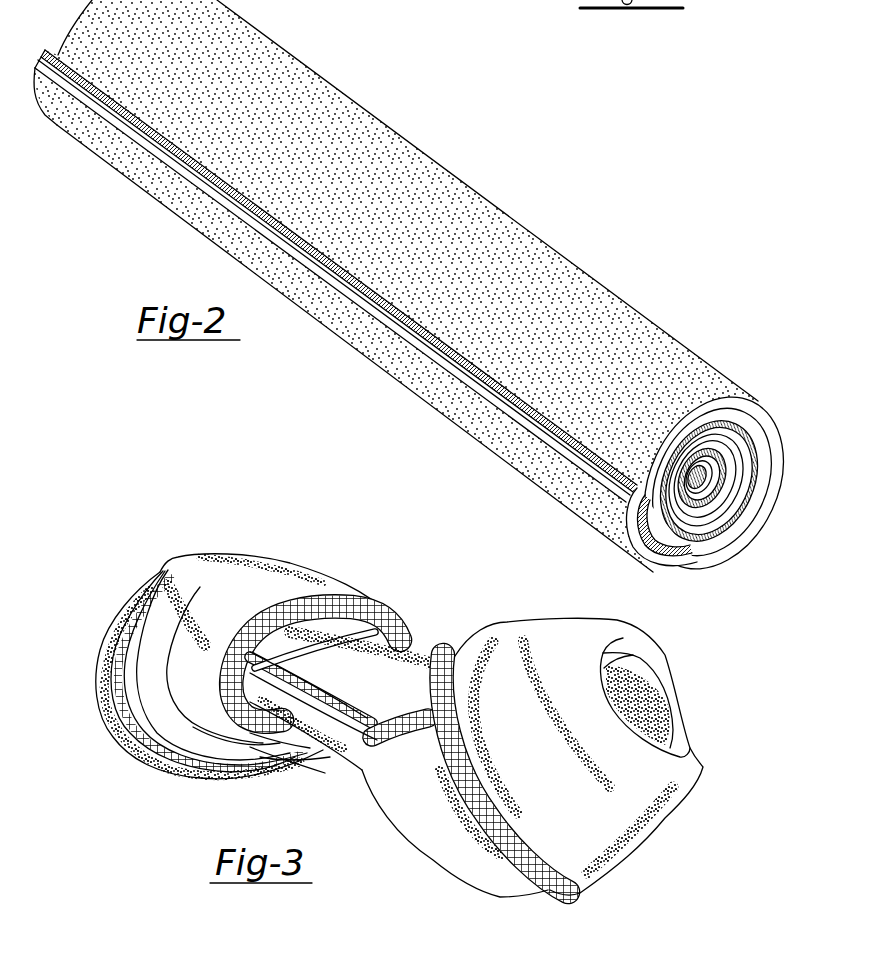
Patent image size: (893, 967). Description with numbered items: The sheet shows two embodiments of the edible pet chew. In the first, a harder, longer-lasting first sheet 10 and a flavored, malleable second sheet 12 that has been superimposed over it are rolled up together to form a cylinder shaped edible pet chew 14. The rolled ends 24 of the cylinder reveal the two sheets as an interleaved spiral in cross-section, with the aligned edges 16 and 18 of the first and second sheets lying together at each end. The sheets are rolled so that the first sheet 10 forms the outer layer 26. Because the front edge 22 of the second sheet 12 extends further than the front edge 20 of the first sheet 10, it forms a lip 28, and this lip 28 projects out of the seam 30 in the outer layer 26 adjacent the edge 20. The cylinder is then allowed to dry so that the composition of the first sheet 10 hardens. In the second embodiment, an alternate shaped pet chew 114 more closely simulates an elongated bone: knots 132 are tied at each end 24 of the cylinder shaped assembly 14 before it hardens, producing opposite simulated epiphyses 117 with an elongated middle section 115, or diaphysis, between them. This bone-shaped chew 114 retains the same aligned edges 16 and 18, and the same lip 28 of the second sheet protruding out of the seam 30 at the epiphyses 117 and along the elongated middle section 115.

In FIG. 2, the first sheet 10 is at (503, 442).
In FIG. 3, the first sheet 10 is at (627, 850).
In FIG. 2, the second sheet 12 is at (742, 480).
In FIG. 3, the second sheet 12 is at (525, 873).
In FIG. 2, the cylinder shaped edible pet chew 14 is at (280, 98).
In FIG. 2, the aligned edge of sheet 10 16 is at (725, 533).
In FIG. 2, the aligned edge of sheet 12 18 is at (742, 510).
In FIG. 2, the front edge of sheet 10 20 is at (387, 325).
In FIG. 2, the front edge of sheet 12 22 is at (367, 287).
In FIG. 2, the rolled ends 24 is at (740, 445).
In FIG. 2, the outer layer 26 is at (617, 322).
In FIG. 3, the outer layer 26 is at (423, 660).
In FIG. 2, the lip 28 is at (415, 327).
In FIG. 3, the lip 28 is at (333, 603).
In FIG. 2, the seam 30 is at (622, 526).
In FIG. 3, the alternate shaped pet chew 114 is at (305, 562).
In FIG. 3, the elongated middle section 115 is at (373, 650).
In FIG. 3, the simulated epiphyses 117 is at (162, 572).
In FIG. 3, the knots 132 is at (103, 663).